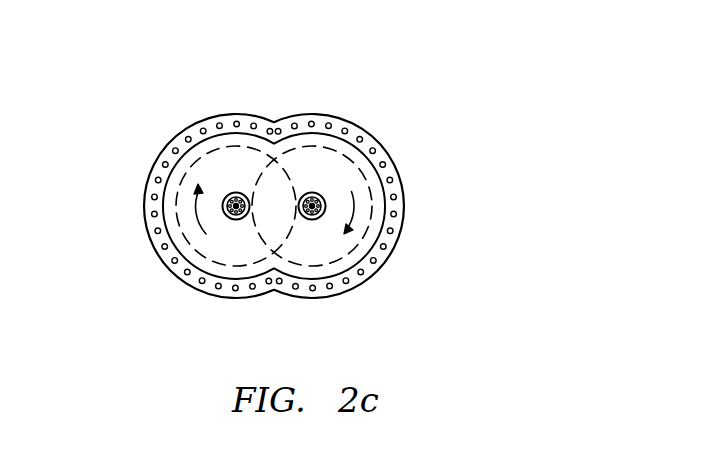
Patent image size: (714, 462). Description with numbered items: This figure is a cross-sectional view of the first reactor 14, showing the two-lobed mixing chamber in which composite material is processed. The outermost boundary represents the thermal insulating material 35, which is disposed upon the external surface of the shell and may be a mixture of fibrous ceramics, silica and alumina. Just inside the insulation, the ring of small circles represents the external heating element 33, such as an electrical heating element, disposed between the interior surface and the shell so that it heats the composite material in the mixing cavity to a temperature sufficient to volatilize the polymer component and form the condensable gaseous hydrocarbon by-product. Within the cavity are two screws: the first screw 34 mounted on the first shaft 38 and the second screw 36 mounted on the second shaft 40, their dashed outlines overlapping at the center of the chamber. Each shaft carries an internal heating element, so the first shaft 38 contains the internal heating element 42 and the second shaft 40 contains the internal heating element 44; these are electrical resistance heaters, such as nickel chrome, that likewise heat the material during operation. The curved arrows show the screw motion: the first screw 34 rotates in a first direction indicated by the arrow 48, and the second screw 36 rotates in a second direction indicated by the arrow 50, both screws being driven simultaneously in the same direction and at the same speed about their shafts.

The first reactor 14 is at (305, 184).
The external heating element 33 is at (227, 124).
The first screw 34 is at (362, 218).
The thermal insulating material 35 is at (355, 119).
The second screw 36 is at (191, 230).
The first shaft 38 is at (314, 221).
The second shaft 40 is at (236, 221).
The internal heating element 42 is at (323, 196).
The internal heating element 44 is at (226, 197).
The arrow 48 is at (357, 204).
The arrow 50 is at (195, 205).